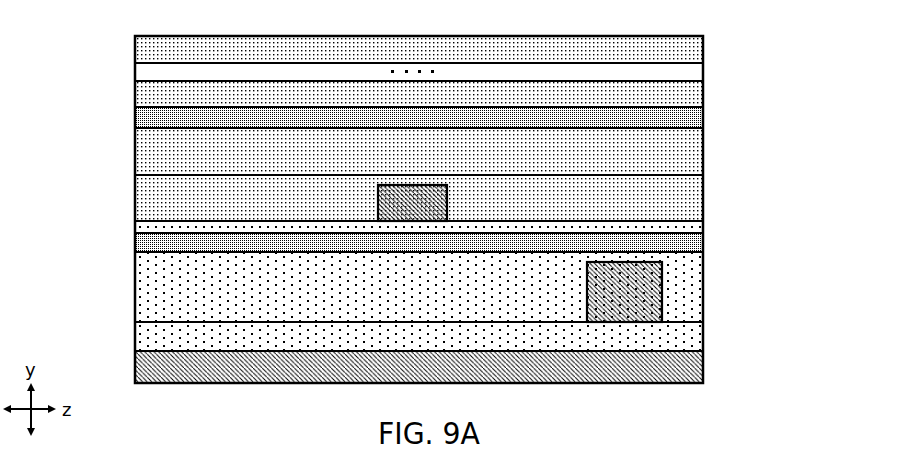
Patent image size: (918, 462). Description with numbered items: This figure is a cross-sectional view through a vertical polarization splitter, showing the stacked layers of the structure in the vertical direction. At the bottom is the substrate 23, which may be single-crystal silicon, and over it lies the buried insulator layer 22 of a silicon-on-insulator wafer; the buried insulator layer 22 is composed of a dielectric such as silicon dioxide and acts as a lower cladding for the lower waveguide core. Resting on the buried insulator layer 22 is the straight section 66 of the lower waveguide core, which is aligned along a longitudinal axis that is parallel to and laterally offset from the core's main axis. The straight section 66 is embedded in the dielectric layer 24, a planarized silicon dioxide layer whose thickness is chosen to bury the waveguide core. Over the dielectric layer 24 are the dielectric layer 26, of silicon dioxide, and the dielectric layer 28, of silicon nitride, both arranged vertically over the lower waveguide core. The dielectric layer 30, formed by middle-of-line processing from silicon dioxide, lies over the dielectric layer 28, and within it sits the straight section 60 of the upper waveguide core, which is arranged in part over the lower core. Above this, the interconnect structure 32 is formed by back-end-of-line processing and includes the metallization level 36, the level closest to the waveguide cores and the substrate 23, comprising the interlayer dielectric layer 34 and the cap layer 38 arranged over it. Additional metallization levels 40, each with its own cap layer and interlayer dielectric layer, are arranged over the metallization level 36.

The buried insulator layer 22 is at (155, 339).
The substrate 23 is at (686, 368).
The dielectric layer 24 is at (155, 290).
The dielectric layer 26 is at (686, 243).
The dielectric layer 28 is at (155, 231).
The dielectric layer 30 is at (686, 200).
The interconnect structure 32 is at (704, 53).
The interlayer dielectric layer 34 is at (686, 156).
The metallization level 36 is at (117, 175).
The cap layer 38 is at (686, 118).
The additional metallization levels 40 is at (117, 100).
The straight section 60 is at (393, 209).
The straight section 66 is at (648, 297).